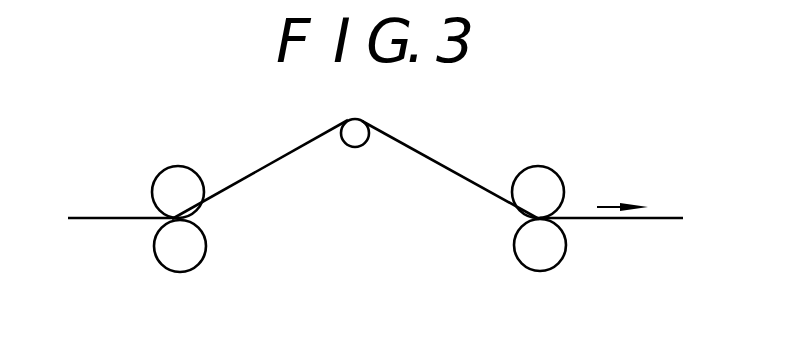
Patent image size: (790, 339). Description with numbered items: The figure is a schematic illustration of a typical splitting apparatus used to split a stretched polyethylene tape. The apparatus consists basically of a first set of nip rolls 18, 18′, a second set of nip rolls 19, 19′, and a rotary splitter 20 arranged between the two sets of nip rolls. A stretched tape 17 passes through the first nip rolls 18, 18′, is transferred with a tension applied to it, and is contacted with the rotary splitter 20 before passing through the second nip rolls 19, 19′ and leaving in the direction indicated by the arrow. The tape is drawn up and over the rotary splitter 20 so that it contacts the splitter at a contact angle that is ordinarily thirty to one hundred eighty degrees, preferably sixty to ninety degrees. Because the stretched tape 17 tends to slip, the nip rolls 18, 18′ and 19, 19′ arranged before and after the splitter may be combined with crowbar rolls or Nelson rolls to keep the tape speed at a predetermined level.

The stretched tape 17 is at (106, 215).
The nip roll 18 is at (186, 167).
The nip roll 18′ is at (206, 245).
The nip roll 19 is at (557, 172).
The nip roll 19′ is at (514, 253).
The rotary splitter 20 is at (352, 147).